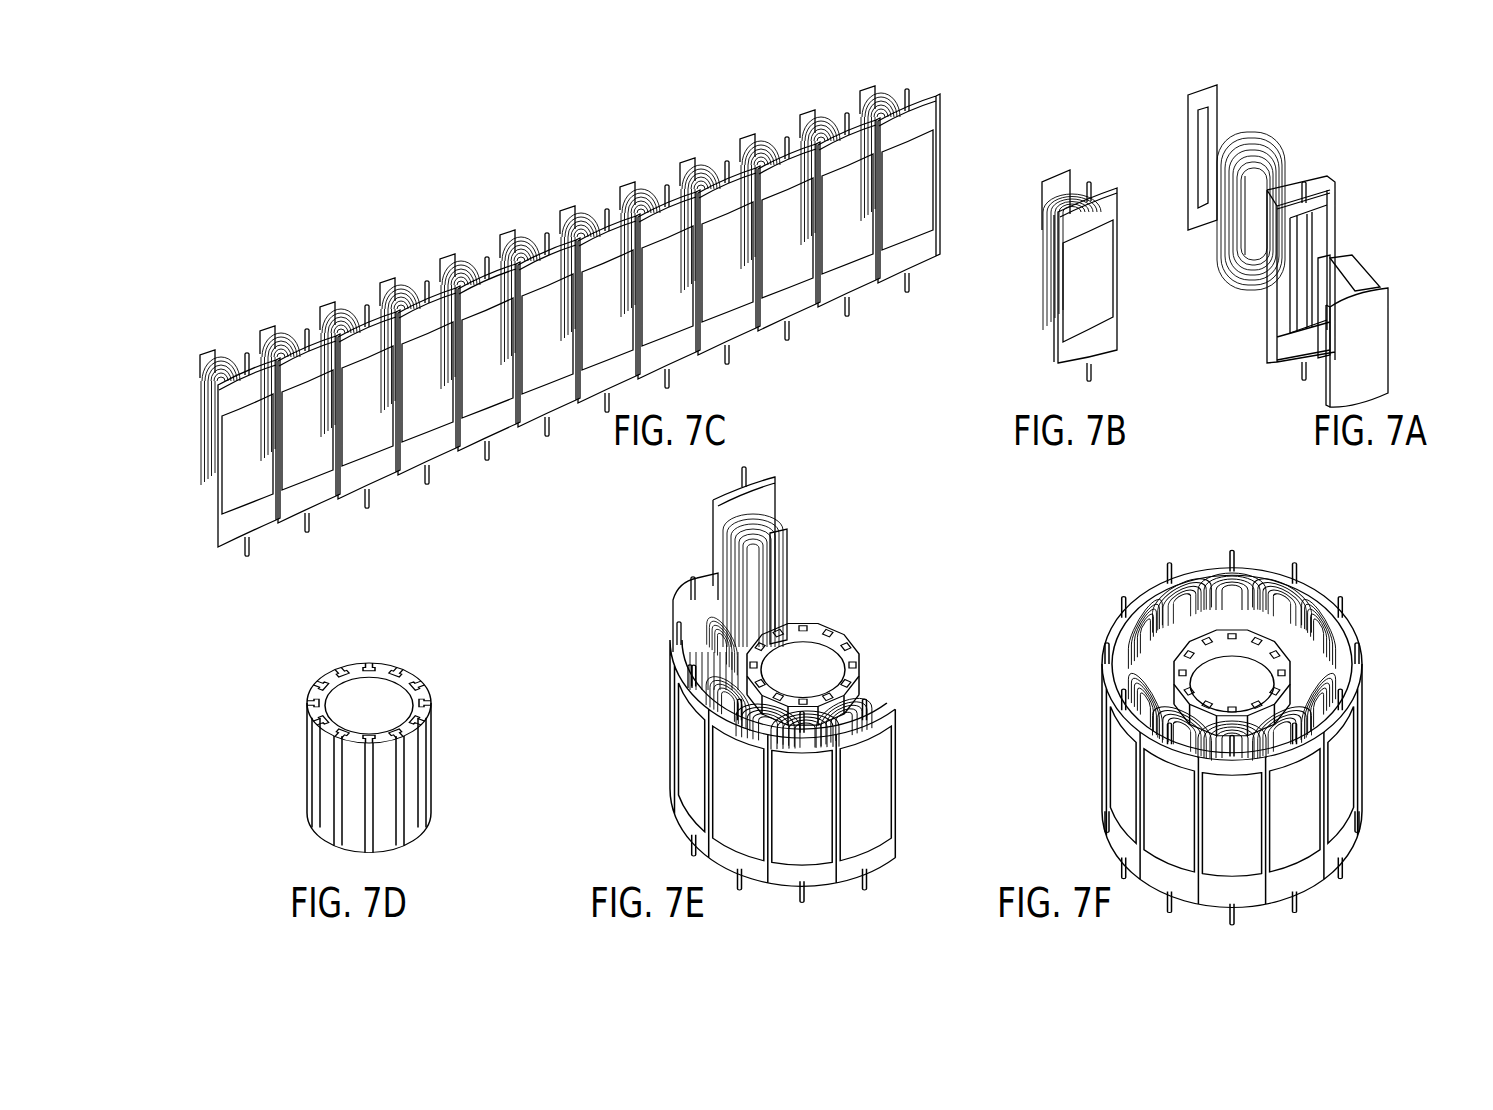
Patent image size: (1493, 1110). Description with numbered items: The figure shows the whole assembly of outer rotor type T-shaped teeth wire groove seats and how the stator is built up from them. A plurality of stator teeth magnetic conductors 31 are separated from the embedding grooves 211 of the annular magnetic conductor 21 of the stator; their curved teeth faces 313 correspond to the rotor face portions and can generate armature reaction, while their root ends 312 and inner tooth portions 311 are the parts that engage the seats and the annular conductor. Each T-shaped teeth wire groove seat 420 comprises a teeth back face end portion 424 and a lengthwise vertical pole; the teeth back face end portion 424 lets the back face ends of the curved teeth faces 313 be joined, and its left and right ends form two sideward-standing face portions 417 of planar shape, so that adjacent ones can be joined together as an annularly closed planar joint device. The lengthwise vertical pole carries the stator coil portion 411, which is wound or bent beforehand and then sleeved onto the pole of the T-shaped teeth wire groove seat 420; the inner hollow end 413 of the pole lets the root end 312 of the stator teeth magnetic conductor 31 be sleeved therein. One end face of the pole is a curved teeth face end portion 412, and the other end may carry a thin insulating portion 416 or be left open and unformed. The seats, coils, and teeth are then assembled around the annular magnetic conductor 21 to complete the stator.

In FIG. 7D, the annular magnetic conductor 21 is at (333, 678).
In FIG. 7E, the annular magnetic conductor 21 is at (858, 660).
In FIG. 7F, the annular magnetic conductor 21 is at (1190, 683).
In FIG. 7D, the embedding groove 211 is at (368, 664).
In FIG. 7E, the embedding groove 211 is at (878, 610).
In FIG. 7F, the embedding groove 211 is at (1118, 578).
In FIG. 7C, the stator teeth magnetic conductor 31 is at (577, 322).
In FIG. 7B, the stator teeth magnetic conductor 31 is at (1078, 292).
In FIG. 7E, the stator teeth magnetic conductor 31 is at (785, 774).
In FIG. 7F, the stator teeth magnetic conductor 31 is at (1231, 791).
In FIG. 7A, the inner tooth portion 311 is at (1330, 258).
In FIG. 7E, the inner tooth portion 311 is at (803, 627).
In FIG. 7F, the inner tooth portion 311 is at (1232, 683).
In FIG. 7A, the root end 312 is at (1346, 282).
In FIG. 7A, the curved teeth face 313 is at (1370, 341).
In FIG. 7C, the stator coil portion 411 is at (532, 280).
In FIG. 7B, the stator coil portion 411 is at (1048, 212).
In FIG. 7A, the stator coil portion 411 is at (1268, 148).
In FIG. 7A, the curved teeth face end portion 412 is at (1297, 350).
In FIG. 7A, the inner hollow end 413 is at (1297, 316).
In FIG. 7B, the thin insulating portion 416 is at (1058, 178).
In FIG. 7A, the thin insulating portion 416 is at (1215, 98).
In FIG. 7C, the sideward-standing face portion 417 is at (218, 547).
In FIG. 7A, the sideward-standing face portion 417 is at (1275, 372).
In FIG. 7E, the sideward-standing face portion 417 is at (688, 668).
In FIG. 7F, the sideward-standing face portion 417 is at (1320, 600).
In FIG. 7C, the T-shaped teeth wire groove seat 420 is at (579, 322).
In FIG. 7B, the T-shaped teeth wire groove seat 420 is at (1073, 358).
In FIG. 7E, the T-shaped teeth wire groove seat 420 is at (818, 494).
In FIG. 7F, the T-shaped teeth wire groove seat 420 is at (1262, 520).
In FIG. 7A, the teeth back face end portion 424 is at (1283, 272).